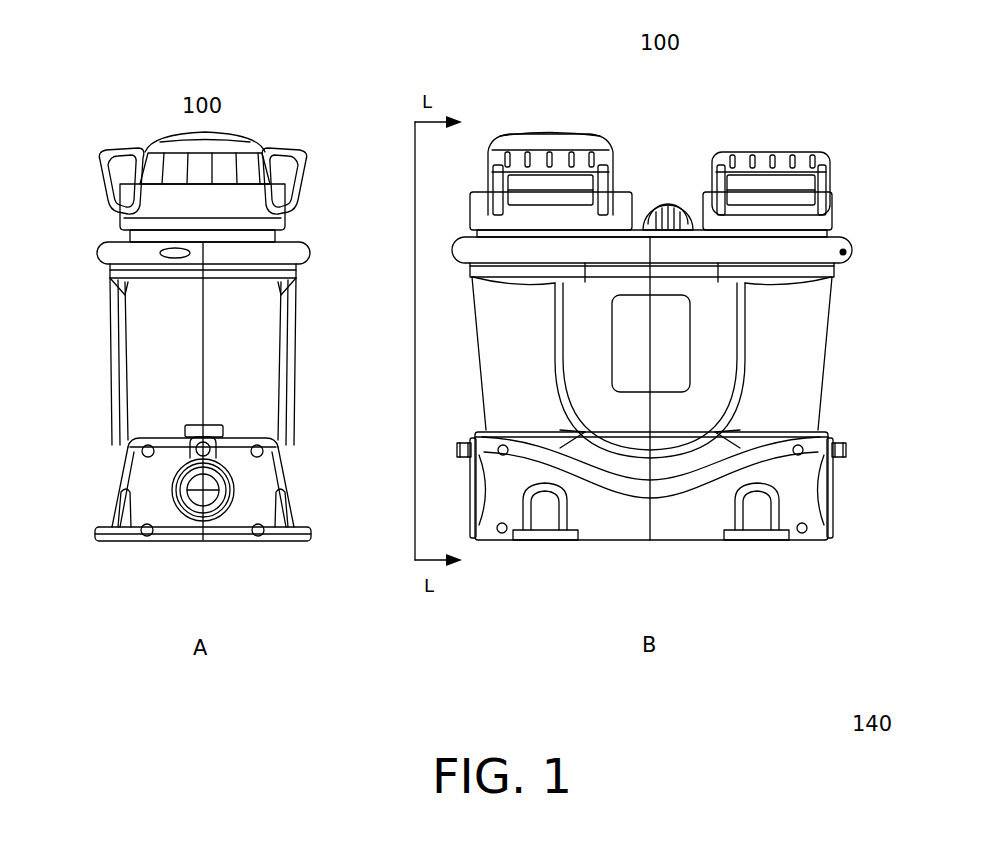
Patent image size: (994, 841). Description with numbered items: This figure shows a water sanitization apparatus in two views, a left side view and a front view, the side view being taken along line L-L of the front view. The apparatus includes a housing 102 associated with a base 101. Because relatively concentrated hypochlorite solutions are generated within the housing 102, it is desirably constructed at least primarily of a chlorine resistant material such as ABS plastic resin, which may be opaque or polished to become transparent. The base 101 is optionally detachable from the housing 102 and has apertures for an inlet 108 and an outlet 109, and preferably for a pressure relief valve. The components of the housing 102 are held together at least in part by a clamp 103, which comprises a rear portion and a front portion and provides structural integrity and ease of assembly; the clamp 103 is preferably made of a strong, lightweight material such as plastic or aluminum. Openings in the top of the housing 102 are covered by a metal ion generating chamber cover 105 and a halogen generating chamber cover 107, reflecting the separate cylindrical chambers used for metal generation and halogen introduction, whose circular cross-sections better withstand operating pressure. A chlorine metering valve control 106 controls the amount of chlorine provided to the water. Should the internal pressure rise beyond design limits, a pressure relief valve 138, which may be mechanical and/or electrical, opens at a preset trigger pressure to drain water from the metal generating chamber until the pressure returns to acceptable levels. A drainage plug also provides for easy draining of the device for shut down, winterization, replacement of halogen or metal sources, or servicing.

The base 101 is at (288, 483).
The housing 102 is at (253, 372).
The clamp 103 is at (297, 253).
The metal ion generating chamber cover 105 is at (157, 153).
The chlorine metering valve control 106 is at (665, 213).
The halogen generating chamber cover 107 is at (767, 153).
The inlet 108 is at (478, 468).
The outlet 109 is at (830, 485).
The pressure relief valve 138 is at (197, 495).